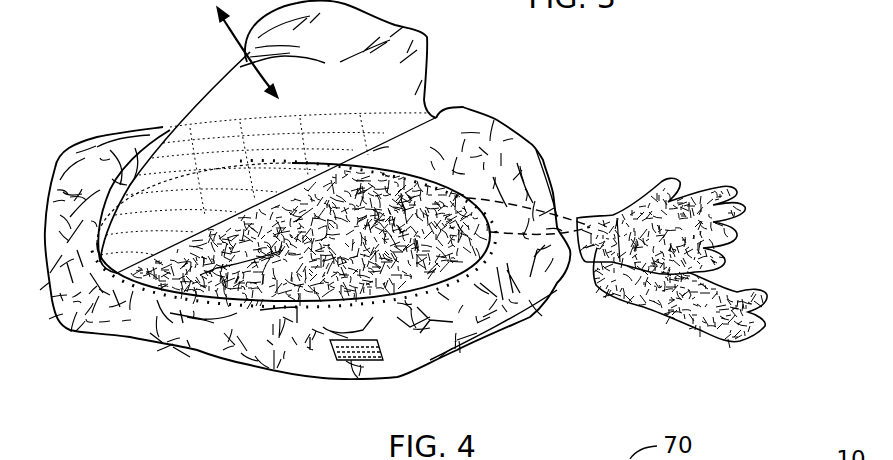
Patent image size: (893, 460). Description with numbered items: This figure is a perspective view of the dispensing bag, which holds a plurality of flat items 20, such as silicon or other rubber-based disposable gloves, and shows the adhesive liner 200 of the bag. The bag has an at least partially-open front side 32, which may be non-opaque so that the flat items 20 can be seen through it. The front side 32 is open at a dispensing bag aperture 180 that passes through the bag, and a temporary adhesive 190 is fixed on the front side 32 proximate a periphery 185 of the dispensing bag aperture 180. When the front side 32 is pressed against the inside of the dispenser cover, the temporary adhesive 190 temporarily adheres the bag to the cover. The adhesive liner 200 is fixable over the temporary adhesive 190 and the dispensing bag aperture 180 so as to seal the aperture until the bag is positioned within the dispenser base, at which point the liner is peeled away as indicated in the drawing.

The flat items 20 is at (690, 196).
The front side 32 is at (190, 276).
The dispensing bag aperture 180 is at (467, 183).
The periphery 185 is at (512, 136).
The temporary adhesive 190 is at (428, 185).
The adhesive liner 200 is at (220, 108).